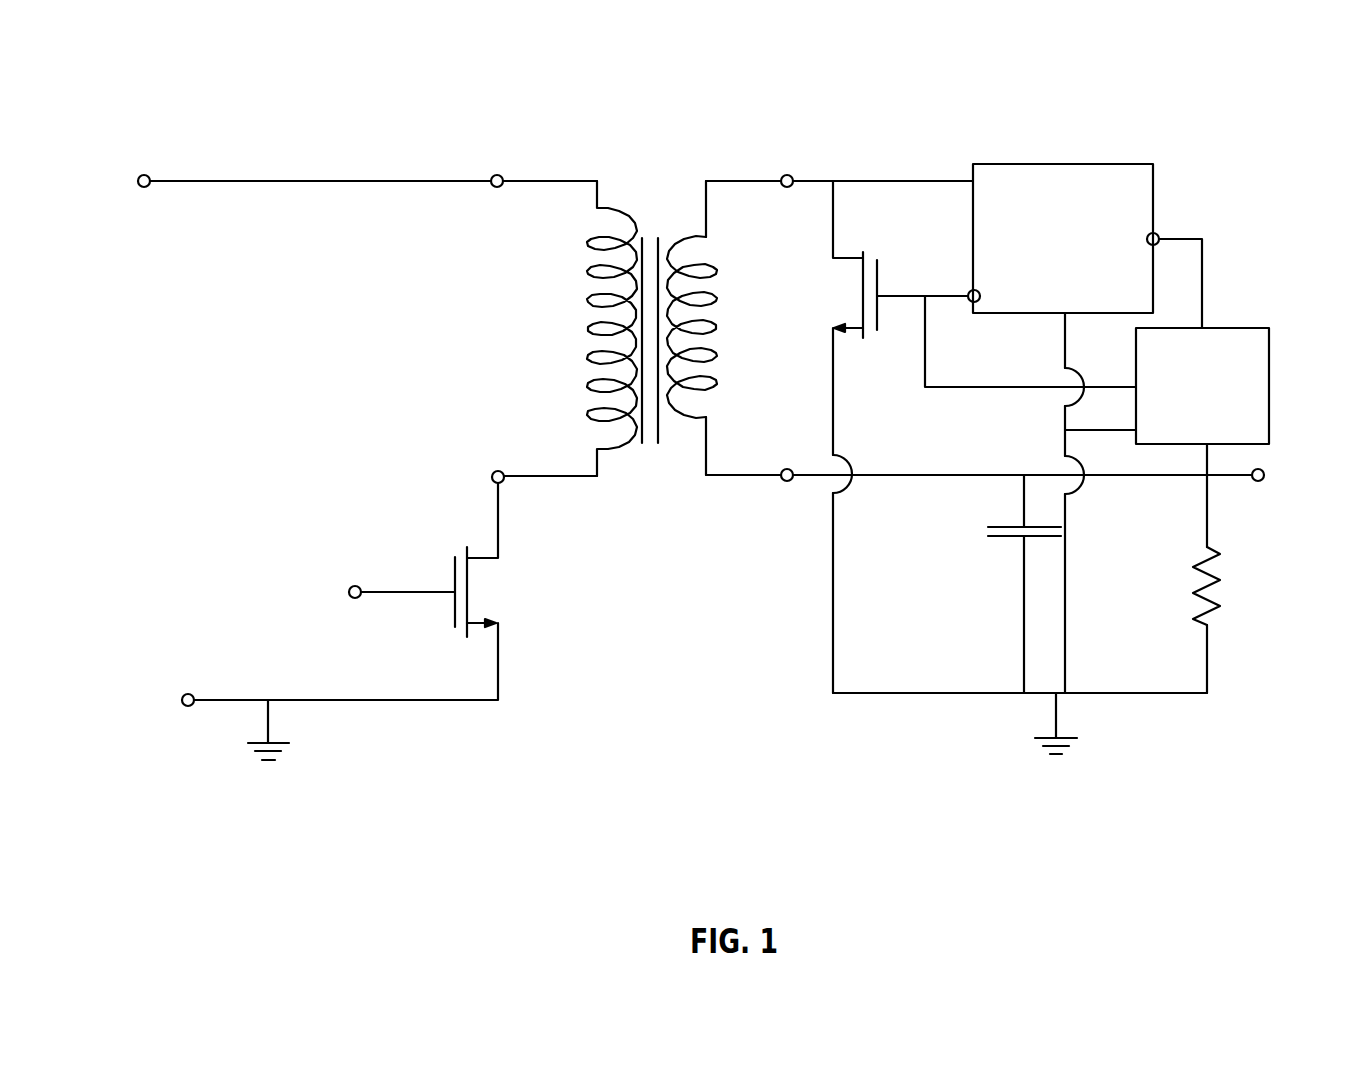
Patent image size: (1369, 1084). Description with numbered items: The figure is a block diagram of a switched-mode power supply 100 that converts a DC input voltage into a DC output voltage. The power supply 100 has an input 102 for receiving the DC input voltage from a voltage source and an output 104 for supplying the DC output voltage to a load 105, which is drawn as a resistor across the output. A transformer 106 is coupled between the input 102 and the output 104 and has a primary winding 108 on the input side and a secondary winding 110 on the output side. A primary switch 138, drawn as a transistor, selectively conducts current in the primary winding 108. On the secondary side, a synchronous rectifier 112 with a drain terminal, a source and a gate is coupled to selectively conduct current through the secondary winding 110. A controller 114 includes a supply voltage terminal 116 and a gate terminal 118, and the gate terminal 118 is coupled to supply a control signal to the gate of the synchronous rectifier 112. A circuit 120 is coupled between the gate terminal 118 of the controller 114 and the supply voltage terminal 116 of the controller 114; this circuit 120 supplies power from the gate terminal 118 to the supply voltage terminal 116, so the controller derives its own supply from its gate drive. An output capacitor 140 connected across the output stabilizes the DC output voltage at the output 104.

The switched-mode power supply 100 is at (303, 80).
The input 102 is at (138, 181).
The output 104 is at (1264, 473).
The load 105 is at (1238, 579).
The transformer 106 is at (632, 285).
The primary winding 108 is at (560, 312).
The secondary winding 110 is at (740, 362).
The synchronous rectifier 112 is at (813, 302).
The controller 114 is at (1073, 164).
The supply voltage terminal 116 is at (1160, 234).
The gate terminal 118 is at (966, 291).
The circuit 120 is at (1213, 328).
The primary switch 138 is at (449, 534).
The output capacitor 140 is at (990, 561).